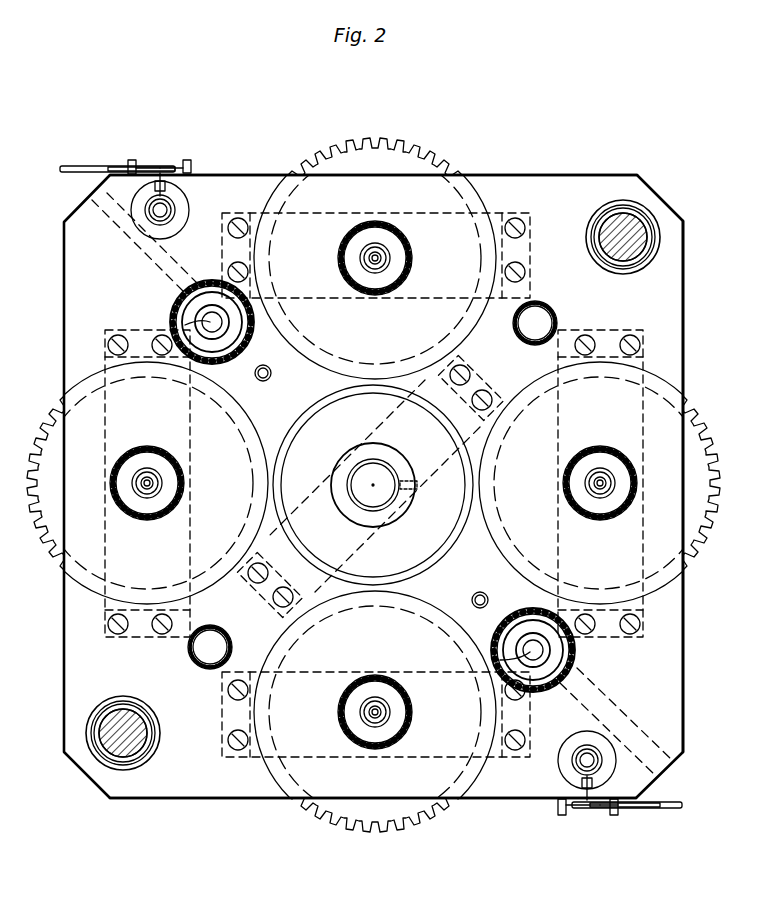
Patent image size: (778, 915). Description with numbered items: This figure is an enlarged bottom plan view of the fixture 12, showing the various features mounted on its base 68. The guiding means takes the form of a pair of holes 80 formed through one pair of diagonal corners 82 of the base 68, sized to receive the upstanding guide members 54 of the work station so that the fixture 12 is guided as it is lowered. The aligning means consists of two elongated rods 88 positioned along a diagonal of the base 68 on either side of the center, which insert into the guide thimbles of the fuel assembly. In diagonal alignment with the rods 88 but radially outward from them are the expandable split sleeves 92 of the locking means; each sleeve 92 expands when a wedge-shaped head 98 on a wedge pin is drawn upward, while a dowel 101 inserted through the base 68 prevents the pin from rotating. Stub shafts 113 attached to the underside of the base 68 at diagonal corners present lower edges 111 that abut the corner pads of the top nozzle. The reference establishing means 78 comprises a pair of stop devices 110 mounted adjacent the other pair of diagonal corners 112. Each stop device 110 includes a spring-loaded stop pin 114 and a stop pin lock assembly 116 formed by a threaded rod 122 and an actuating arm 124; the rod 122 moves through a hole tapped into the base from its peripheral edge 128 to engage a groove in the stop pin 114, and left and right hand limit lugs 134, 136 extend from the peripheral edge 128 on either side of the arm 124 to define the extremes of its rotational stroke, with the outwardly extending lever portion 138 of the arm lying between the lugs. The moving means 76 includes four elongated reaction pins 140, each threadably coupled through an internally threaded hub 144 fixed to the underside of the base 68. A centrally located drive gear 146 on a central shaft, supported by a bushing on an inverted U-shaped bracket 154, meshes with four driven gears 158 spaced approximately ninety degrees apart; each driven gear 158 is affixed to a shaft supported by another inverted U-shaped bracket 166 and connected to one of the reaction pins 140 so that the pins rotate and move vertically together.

The fixture 12 is at (690, 318).
The guide member 54 is at (598, 230).
The base 68 is at (684, 692).
The moving means 76 is at (220, 804).
The reference establishing means 78 is at (170, 160).
The hole 80 is at (616, 258).
The diagonal corner 82 is at (585, 176).
The elongated rod 88 is at (268, 380).
The expandable split sleeve 92 is at (228, 332).
The wedge-shaped head 98 is at (212, 312).
The dowel 101 is at (182, 324).
The stop device 110 is at (145, 160).
The lower edge 111 is at (550, 320).
The diagonal corner 112 is at (78, 212).
The stub shaft 113 is at (537, 303).
The stop pin 114 is at (170, 215).
The stop pin lock assembly 116 is at (168, 160).
The threaded rod 122 is at (178, 180).
The actuating arm 124 is at (116, 166).
The peripheral edge 128 is at (250, 175).
The left hand limit lug 134 is at (130, 160).
The right hand limit lug 136 is at (190, 160).
The lever 138 is at (60, 165).
The reaction pin 140 is at (390, 258).
The internally threaded hub 144 is at (375, 233).
The drive gear 146 is at (440, 588).
The inverted U-shaped bracket 154 is at (305, 490).
The driven gear 158 is at (375, 152).
The inverted U-shaped bracket 166 is at (470, 198).